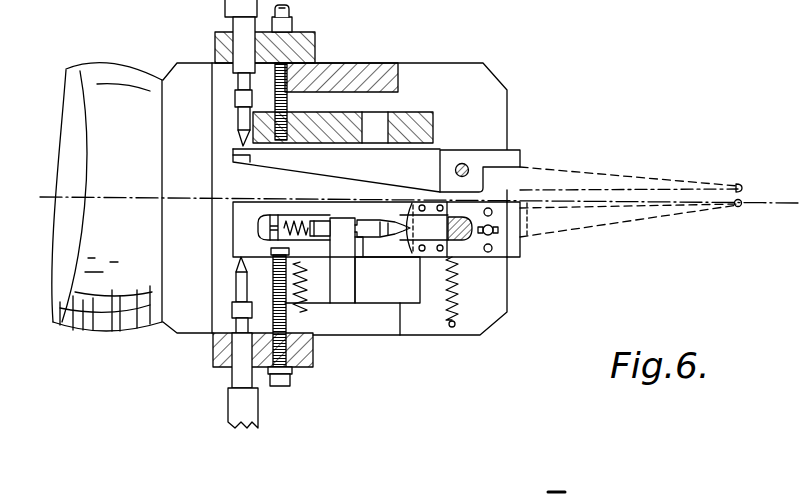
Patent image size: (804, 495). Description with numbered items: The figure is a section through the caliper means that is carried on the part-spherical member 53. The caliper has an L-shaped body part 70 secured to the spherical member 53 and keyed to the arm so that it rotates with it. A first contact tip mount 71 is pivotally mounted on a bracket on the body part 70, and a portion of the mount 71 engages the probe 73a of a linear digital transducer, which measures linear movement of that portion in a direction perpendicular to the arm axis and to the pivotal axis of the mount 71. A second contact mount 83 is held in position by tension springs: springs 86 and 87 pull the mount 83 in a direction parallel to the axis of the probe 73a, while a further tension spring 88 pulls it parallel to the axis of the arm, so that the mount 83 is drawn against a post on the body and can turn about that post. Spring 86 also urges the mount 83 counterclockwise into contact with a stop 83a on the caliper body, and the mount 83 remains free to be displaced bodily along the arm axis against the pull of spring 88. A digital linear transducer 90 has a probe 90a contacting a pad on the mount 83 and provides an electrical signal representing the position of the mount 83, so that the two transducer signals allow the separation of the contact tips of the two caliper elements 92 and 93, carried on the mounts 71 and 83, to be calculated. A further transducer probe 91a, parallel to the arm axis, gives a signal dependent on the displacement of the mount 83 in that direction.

The L-shaped body part 70 is at (438, 78).
The part-spherical member 53 is at (112, 336).
The probe 73a is at (240, 133).
The contact tip mount 71 is at (448, 160).
The second contact mount 83 is at (460, 258).
The tension spring 88 is at (298, 225).
The probe 91a is at (397, 232).
The tension spring 86 is at (298, 287).
The tension spring 87 is at (458, 303).
The stop 83a is at (262, 368).
The digital linear transducer 90 is at (237, 411).
The probe 90a is at (238, 262).
The caliper element 92 is at (563, 177).
The caliper element 93 is at (612, 215).